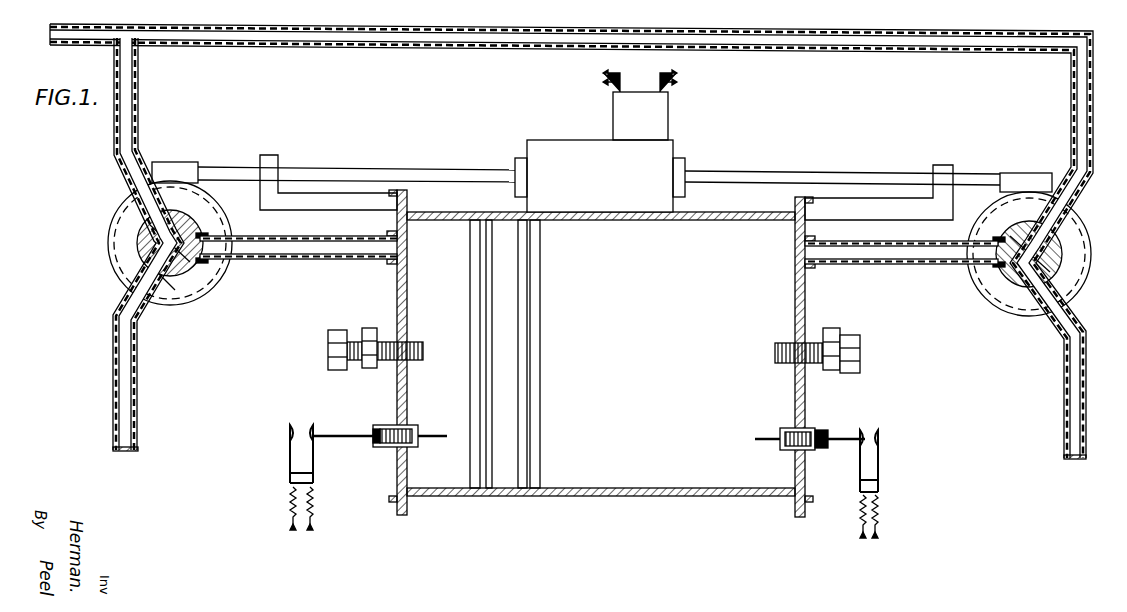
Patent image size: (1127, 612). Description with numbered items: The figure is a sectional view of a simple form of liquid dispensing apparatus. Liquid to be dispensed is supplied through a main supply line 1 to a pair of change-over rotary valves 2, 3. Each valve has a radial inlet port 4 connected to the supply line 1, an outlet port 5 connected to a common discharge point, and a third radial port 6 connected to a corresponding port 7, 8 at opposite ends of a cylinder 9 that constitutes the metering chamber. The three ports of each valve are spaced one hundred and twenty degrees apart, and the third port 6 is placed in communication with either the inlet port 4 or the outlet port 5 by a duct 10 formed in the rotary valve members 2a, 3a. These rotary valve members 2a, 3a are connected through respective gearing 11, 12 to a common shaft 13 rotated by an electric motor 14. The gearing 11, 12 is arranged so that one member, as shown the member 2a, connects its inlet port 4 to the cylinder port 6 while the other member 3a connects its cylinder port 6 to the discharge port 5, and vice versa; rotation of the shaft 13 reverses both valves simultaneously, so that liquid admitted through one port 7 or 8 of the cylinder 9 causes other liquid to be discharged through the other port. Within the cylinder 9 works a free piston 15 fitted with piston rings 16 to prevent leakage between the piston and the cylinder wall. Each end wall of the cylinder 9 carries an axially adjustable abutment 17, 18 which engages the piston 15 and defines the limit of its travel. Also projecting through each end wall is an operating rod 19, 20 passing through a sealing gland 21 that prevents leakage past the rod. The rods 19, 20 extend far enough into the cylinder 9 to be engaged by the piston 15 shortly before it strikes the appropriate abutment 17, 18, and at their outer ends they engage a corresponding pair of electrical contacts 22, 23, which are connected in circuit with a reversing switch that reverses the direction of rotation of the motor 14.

The main supply line 1 is at (384, 42).
The change-over rotary valve 2 is at (145, 230).
The rotary valve member 2a is at (153, 242).
The change-over rotary valve 3 is at (1065, 248).
The rotary valve member 3a is at (1060, 270).
The inlet port 4 is at (137, 191).
The outlet port 5 is at (145, 265).
The third radial port 6 is at (215, 258).
The cylinder port 7 is at (405, 248).
The cylinder port 8 is at (797, 247).
The cylinder 9 is at (668, 357).
The duct 10 is at (187, 270).
The gearing 11 is at (192, 197).
The gearing 12 is at (1027, 177).
The common shaft 13 is at (758, 172).
The electric motor 14 is at (605, 189).
The free piston 15 is at (543, 350).
The piston rings 16 is at (518, 432).
The axially adjustable abutment 17 is at (423, 343).
The axially adjustable abutment 18 is at (777, 348).
The operating rod 19 is at (430, 433).
The operating rod 20 is at (776, 438).
The sealing gland 21 is at (366, 452).
The electrical contact 22 is at (300, 424).
The electrical contact 23 is at (869, 430).